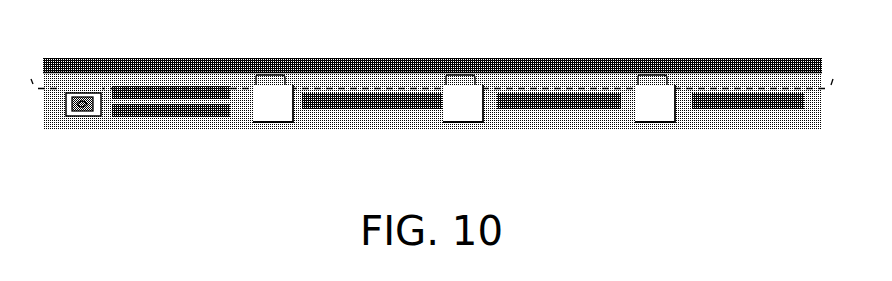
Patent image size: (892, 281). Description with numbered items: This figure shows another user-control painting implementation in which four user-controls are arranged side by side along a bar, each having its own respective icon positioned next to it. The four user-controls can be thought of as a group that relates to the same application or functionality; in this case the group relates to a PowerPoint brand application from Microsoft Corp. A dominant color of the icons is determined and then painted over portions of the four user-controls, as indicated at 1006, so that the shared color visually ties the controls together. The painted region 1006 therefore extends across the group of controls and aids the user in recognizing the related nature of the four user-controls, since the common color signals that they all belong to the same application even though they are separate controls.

The painted portion 1006 is at (838, 50).